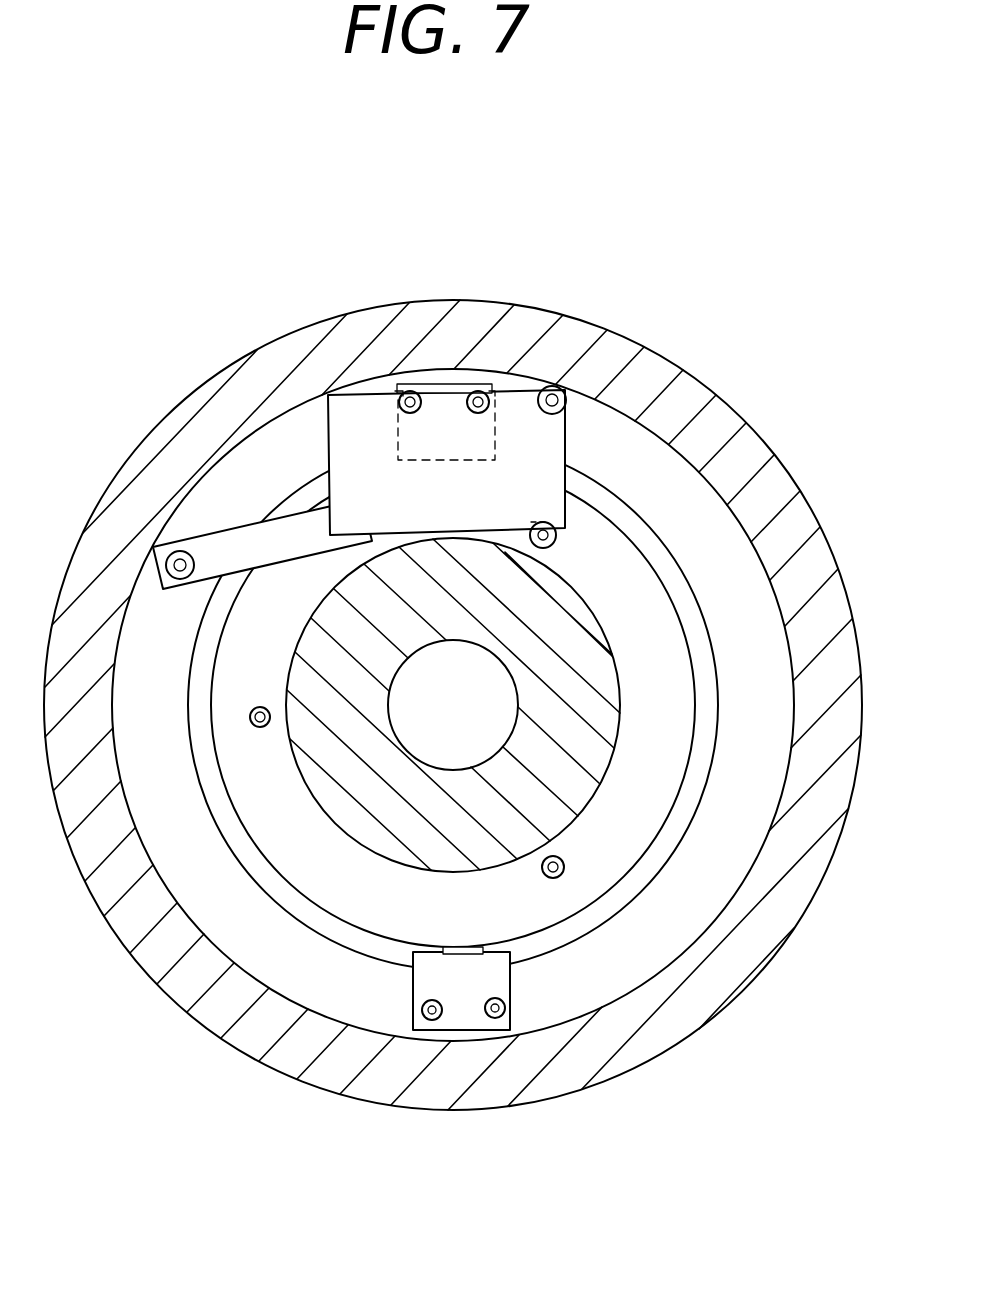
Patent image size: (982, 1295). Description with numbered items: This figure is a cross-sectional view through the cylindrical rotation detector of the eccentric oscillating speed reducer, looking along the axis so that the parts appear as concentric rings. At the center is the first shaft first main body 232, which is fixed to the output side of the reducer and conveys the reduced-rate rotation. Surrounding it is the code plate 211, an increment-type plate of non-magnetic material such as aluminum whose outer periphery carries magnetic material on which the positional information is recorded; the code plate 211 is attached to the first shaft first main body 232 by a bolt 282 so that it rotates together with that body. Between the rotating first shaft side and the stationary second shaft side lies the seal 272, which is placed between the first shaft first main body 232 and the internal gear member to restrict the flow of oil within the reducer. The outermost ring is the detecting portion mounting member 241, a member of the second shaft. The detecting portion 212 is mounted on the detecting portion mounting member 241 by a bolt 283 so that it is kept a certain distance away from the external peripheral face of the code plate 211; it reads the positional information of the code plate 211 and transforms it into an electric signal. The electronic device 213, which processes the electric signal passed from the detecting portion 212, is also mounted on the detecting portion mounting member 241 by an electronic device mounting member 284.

The code plate 211 is at (665, 655).
The detecting portion 212 is at (450, 383).
The electronic device 213 is at (325, 456).
The first shaft first main body 232 is at (583, 613).
The detecting portion mounting member 241 is at (767, 957).
The seal 272 is at (716, 712).
The bolt 282 is at (250, 712).
The bolt 283 is at (407, 392).
The electronic device mounting member 284 is at (223, 547).